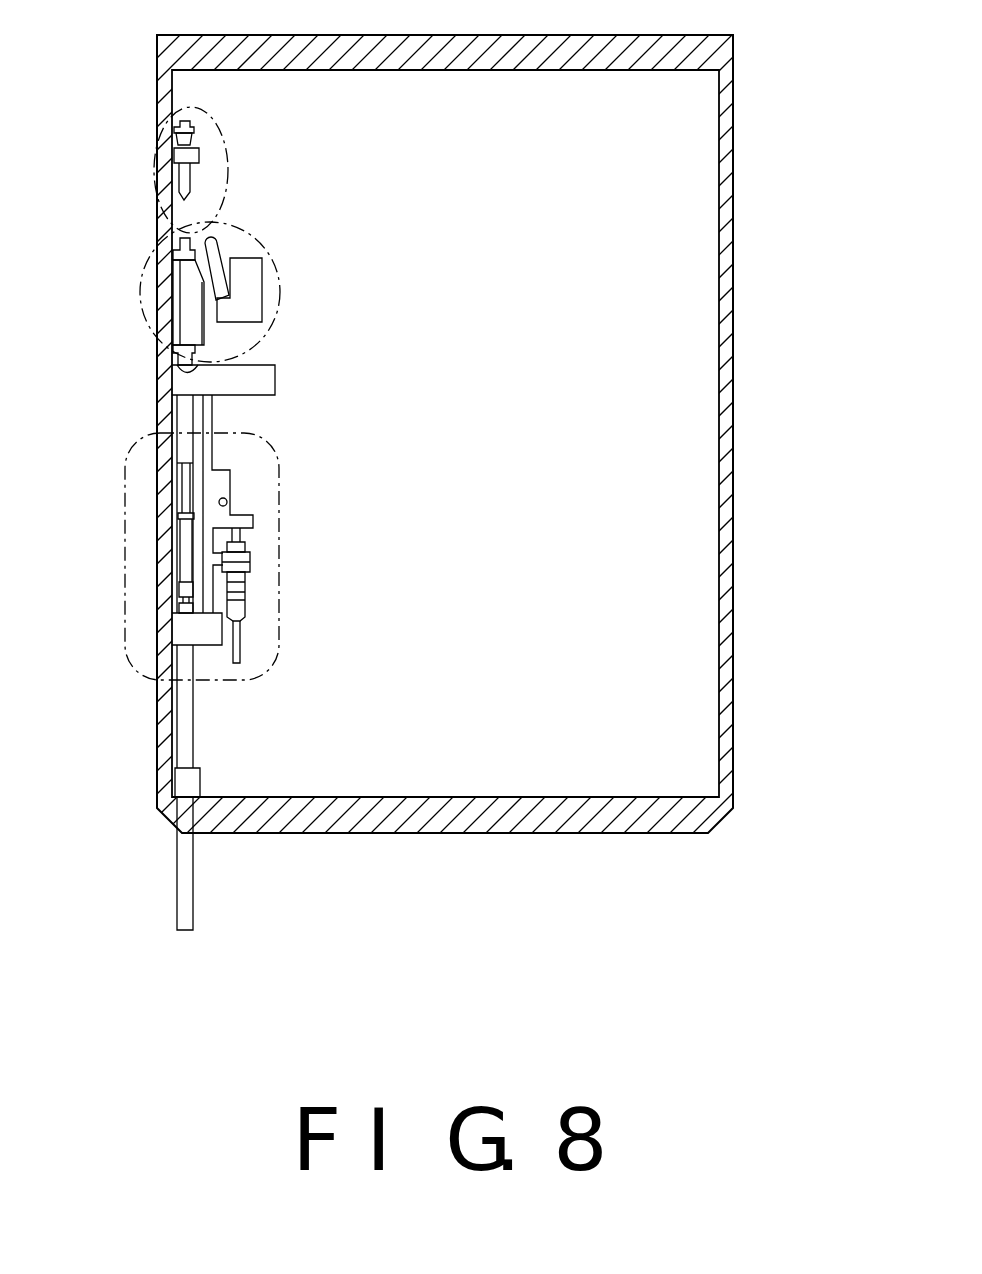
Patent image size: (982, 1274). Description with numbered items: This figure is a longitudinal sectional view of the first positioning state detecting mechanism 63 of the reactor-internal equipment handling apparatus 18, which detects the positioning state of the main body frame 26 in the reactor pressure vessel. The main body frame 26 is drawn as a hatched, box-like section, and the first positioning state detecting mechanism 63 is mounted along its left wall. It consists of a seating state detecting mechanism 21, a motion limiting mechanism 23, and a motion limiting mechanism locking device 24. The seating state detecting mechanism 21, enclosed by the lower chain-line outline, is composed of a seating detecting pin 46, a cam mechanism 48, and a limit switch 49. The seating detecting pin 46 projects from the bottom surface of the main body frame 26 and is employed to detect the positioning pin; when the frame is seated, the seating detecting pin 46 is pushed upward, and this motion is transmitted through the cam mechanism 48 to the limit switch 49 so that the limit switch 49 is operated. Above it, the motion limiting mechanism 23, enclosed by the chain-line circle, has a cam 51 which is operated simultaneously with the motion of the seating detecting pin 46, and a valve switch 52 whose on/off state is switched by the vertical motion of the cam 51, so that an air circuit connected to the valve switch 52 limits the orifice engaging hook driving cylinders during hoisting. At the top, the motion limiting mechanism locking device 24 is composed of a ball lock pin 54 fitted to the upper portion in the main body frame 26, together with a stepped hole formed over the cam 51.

The reactor-internal equipment handling apparatus 18 is at (743, 387).
The main body frame 26 is at (157, 80).
The ball lock pin 54 is at (176, 128).
The motion limiting mechanism locking device 24 is at (227, 168).
The motion limiting mechanism 23 is at (135, 307).
The cam 51 is at (193, 327).
The valve switch 52 is at (250, 285).
The first positioning state detecting mechanism 63 is at (318, 425).
The seating state detecting mechanism 21 is at (122, 583).
The seating detecting pin 46 is at (185, 888).
The cam mechanism 48 is at (185, 500).
The limit switch 49 is at (245, 582).